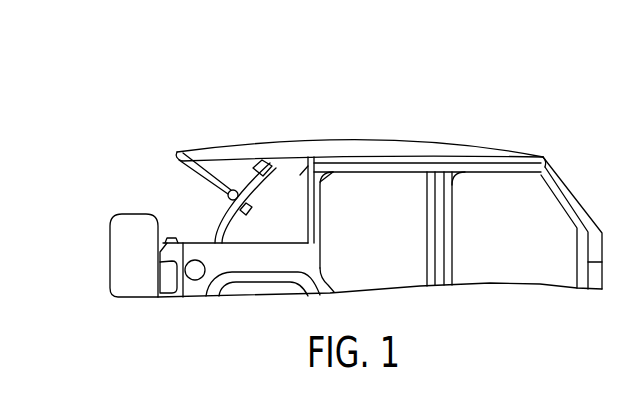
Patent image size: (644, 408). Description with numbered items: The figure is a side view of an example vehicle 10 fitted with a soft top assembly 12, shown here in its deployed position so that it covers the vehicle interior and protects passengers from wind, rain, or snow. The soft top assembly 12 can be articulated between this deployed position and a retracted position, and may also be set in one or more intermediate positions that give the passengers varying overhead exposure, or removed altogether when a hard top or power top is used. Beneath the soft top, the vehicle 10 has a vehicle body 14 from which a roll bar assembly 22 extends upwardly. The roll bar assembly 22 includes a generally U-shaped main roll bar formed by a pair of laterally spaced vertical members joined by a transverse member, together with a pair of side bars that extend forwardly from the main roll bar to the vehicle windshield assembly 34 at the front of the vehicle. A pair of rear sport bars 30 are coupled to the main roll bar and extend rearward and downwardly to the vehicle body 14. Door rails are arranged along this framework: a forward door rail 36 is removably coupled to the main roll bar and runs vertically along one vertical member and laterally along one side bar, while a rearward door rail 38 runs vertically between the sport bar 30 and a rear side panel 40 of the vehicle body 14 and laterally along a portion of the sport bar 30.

The vehicle 10 is at (504, 100).
The soft top assembly 12 is at (149, 174).
The vehicle body 14 is at (192, 290).
The roll bar assembly 22 is at (411, 259).
The sport bar 30 is at (220, 230).
The vehicle windshield assembly 34 is at (573, 197).
The forward door rail 36 is at (480, 168).
The rearward door rail 38 is at (320, 215).
The rear side panel 40 is at (303, 261).